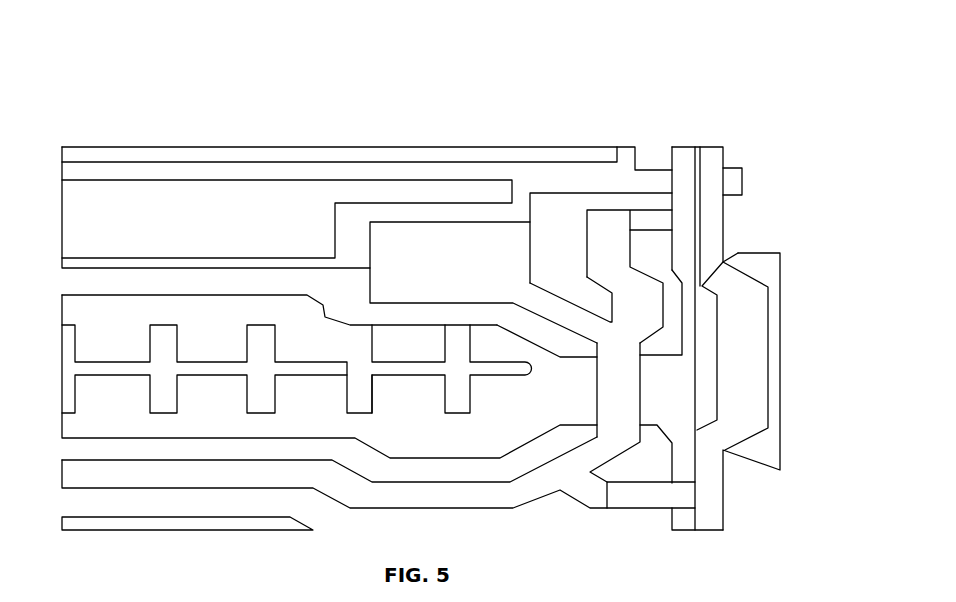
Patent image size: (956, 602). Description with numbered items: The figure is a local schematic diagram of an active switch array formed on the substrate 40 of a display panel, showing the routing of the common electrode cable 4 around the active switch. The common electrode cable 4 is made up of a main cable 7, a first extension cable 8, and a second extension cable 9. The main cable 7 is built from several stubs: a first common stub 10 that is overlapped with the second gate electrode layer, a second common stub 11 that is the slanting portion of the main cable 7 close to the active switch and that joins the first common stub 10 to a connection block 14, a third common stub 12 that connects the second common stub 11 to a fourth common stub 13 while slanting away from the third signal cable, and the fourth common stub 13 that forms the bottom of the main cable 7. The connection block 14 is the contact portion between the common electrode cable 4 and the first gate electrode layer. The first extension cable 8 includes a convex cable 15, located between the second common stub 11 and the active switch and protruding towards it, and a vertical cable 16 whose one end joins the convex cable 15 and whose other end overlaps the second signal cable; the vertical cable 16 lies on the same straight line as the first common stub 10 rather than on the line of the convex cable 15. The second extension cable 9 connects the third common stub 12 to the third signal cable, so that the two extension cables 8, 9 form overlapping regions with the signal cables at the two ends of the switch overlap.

The substrate 40 is at (120, 106).
The common electrode cable 4 is at (822, 297).
The main cable 7 is at (790, 53).
The first extension cable 8 is at (755, 196).
The second extension cable 9 is at (597, 487).
The first common stub 10 is at (620, 380).
The second common stub 11 is at (567, 313).
The third common stub 12 is at (552, 470).
The fourth common stub 13 is at (460, 495).
The connection block 14 is at (382, 260).
The convex cable 15 is at (643, 303).
The vertical cable 16 is at (618, 255).